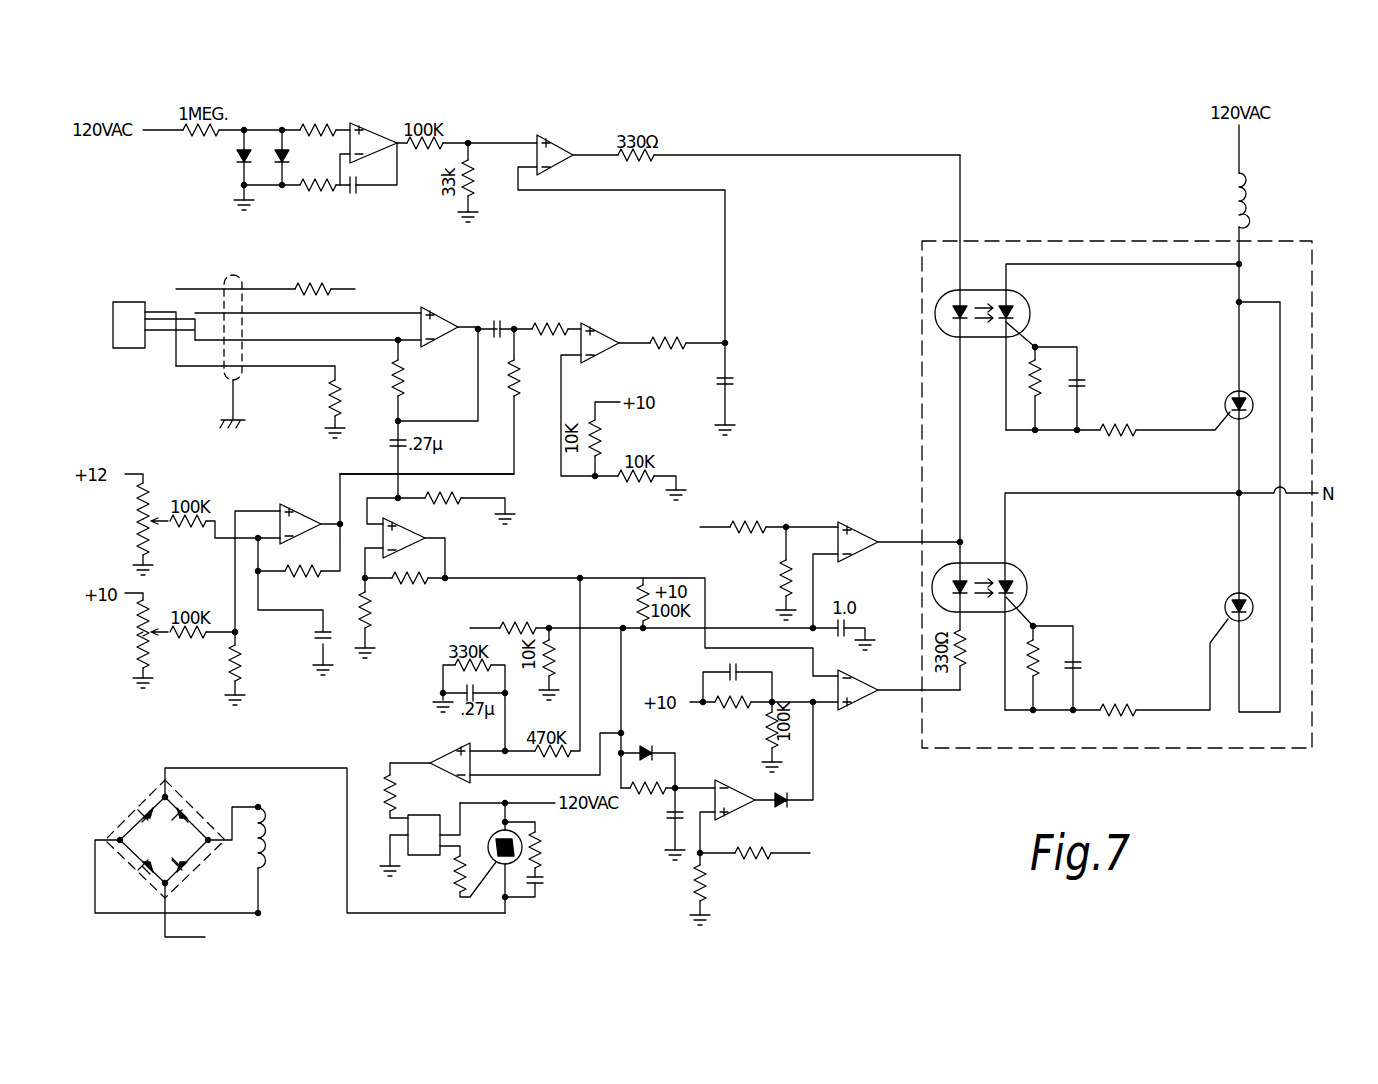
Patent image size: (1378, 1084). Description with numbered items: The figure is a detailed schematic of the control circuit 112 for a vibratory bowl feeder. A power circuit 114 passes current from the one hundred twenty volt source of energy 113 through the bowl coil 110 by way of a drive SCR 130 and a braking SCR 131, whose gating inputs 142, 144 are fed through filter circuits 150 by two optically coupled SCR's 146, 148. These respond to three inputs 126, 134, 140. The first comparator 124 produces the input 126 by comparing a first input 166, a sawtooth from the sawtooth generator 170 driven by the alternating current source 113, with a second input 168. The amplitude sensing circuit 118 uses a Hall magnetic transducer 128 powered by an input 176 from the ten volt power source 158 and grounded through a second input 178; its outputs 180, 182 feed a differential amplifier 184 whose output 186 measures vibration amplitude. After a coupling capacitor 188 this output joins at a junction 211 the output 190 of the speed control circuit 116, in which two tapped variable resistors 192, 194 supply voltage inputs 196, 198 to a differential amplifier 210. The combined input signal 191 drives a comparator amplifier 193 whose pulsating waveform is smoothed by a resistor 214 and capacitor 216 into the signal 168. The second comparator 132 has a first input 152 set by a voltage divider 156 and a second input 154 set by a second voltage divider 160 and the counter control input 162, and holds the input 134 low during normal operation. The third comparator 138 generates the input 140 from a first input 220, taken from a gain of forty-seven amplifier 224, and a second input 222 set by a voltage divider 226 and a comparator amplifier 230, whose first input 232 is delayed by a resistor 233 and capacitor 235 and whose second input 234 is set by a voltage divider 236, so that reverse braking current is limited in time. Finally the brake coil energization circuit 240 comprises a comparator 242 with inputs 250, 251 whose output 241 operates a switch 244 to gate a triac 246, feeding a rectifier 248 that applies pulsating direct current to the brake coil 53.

The brake coil 53 is at (266, 842).
The bowl coil 110 is at (1250, 207).
The control circuit 112 is at (840, 141).
The source of energy 113 is at (150, 118).
The power circuit 114 is at (1135, 748).
The speed control circuit 116 is at (212, 676).
The amplitude sensing circuit 118 is at (206, 410).
The comparator 124 is at (558, 150).
The input 126 is at (962, 187).
The Hall magnetic transducer 128 is at (125, 348).
The drive SCR 130 is at (1228, 392).
The braking SCR 131 is at (1228, 595).
The second comparator 132 is at (845, 519).
The second input 134 is at (893, 539).
The third comparator 138 is at (853, 710).
The third input 140 is at (890, 694).
The gating input 142 is at (1173, 430).
The gating input 144 is at (1210, 662).
The optically coupled SCR 146 is at (1030, 314).
The optically coupled SCR 148 is at (1027, 589).
The filter circuit 150 is at (1101, 361).
The first input 152 is at (811, 524).
The second input 154 is at (817, 591).
The voltage divider 156 is at (772, 547).
The 10 volt power source 158 is at (356, 289).
The second voltage divider 160 is at (566, 599).
The control input 162 is at (471, 628).
The first input 166 is at (497, 142).
The second input 168 is at (608, 190).
The sawtooth generator 170 is at (415, 111).
The input 176 is at (196, 289).
The second input 178 is at (268, 366).
The output 180 is at (418, 310).
The output 182 is at (373, 348).
The differential amplifier 184 is at (463, 300).
The output 186 is at (458, 342).
The coupling capacitor 188 is at (524, 315).
The output 190 is at (518, 358).
The input signal 191 is at (588, 325).
The comparator amplifier 193 is at (605, 355).
The tapped variable resistor 194 is at (143, 639).
The tapped variable resistor 192 is at (143, 531).
The voltage input 196 is at (216, 550).
The voltage input 198 is at (248, 508).
The differential amplifier 210 is at (307, 499).
The junction 211 is at (516, 333).
The resistor 214 is at (672, 350).
The capacitor 216 is at (740, 378).
The first input 220 is at (813, 656).
The second input 222 is at (811, 772).
The gain of 47 amplifier 224 is at (420, 525).
The voltage divider 226 is at (759, 729).
The comparator amplifier 230 is at (738, 790).
The first input 232 is at (700, 784).
The resistor 233 is at (623, 792).
The second input 234 is at (694, 842).
The capacitor 235 is at (672, 829).
The voltage divider 236 is at (751, 873).
The brake coil energization circuit 240 is at (371, 735).
The output 241 is at (408, 760).
The comparator 242 is at (473, 763).
The switch 244 is at (425, 815).
The triac 246 is at (493, 849).
The rectifier 248 is at (140, 792).
The first input 250 is at (581, 708).
The second input 251 is at (492, 777).